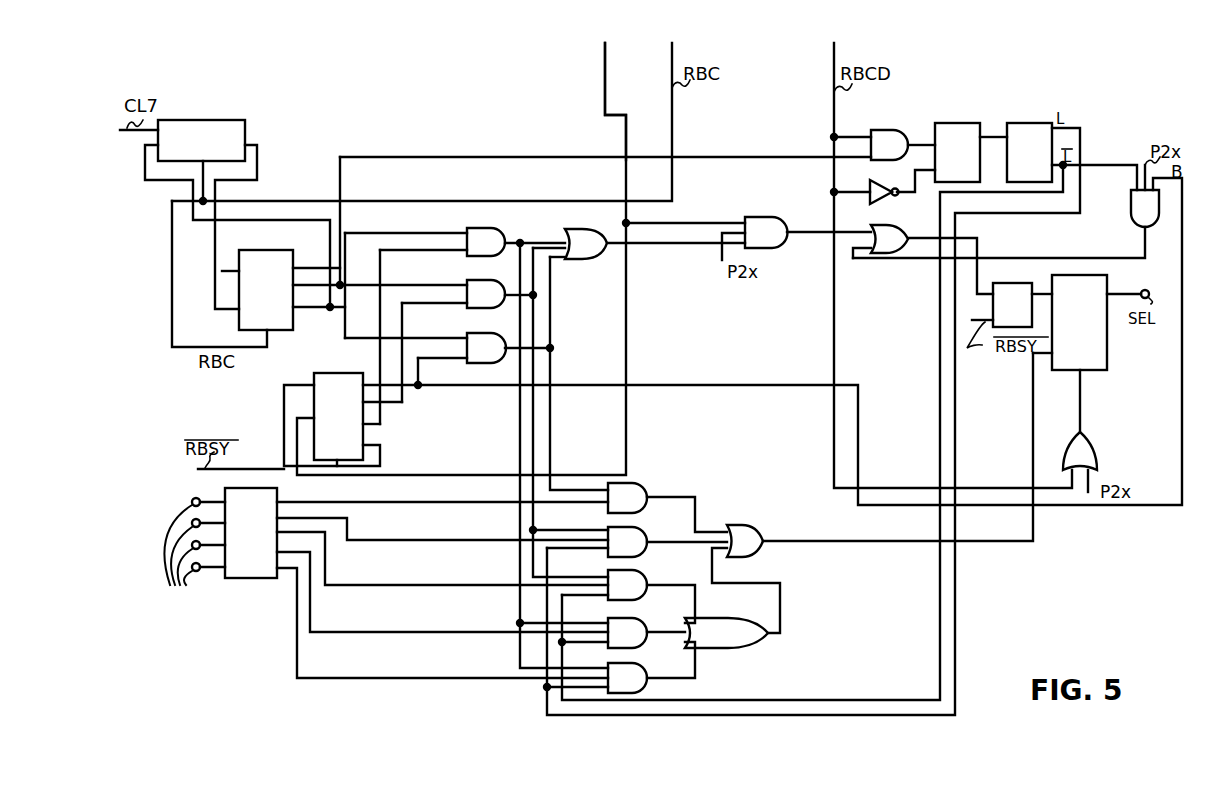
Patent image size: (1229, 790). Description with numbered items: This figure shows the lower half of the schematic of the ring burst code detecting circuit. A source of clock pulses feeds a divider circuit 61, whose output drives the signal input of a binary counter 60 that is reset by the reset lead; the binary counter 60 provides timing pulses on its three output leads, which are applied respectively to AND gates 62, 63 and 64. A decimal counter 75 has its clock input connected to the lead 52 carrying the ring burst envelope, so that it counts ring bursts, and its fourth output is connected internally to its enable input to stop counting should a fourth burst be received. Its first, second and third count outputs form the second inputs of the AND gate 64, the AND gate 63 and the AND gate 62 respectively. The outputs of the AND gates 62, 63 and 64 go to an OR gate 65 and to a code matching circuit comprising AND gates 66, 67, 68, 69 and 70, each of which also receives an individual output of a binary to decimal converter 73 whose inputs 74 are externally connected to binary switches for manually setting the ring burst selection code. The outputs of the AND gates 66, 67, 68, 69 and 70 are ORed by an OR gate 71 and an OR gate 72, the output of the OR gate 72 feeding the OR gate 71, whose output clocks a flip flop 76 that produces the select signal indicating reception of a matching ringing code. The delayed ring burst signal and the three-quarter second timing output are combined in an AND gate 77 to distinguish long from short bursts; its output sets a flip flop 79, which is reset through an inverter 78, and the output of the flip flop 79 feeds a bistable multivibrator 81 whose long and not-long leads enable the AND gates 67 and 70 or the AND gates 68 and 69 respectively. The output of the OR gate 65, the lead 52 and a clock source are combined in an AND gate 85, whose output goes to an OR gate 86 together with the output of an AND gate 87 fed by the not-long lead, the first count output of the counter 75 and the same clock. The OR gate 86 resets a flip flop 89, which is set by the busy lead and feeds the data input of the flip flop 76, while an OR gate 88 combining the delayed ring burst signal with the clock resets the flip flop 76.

The lead 52 is at (605, 108).
The binary counter 60 is at (288, 261).
The divider circuit 61 is at (224, 121).
The AND gate 62 is at (495, 236).
The AND gate 63 is at (494, 288).
The AND gate 64 is at (494, 341).
The OR gate 65 is at (600, 238).
The AND gate 66 is at (636, 494).
The AND gate 67 is at (636, 538).
The AND gate 68 is at (636, 581).
The AND gate 69 is at (636, 629).
The AND gate 70 is at (636, 674).
The OR gate 71 is at (762, 530).
The OR gate 72 is at (752, 646).
The binary to decimal converter 73 is at (277, 580).
The inputs 74 is at (194, 556).
The decimal counter 75 is at (329, 383).
The flip flop 76 is at (1089, 273).
The AND gate 77 is at (886, 129).
The inverter 78 is at (884, 174).
The flip flop 79 is at (935, 124).
The bistable multivibrator 81 is at (1043, 129).
The AND gate 85 is at (782, 224).
The OR gate 86 is at (894, 223).
The AND gate 87 is at (1156, 215).
The OR gate 88 is at (1097, 452).
The flip flop 89 is at (1020, 283).